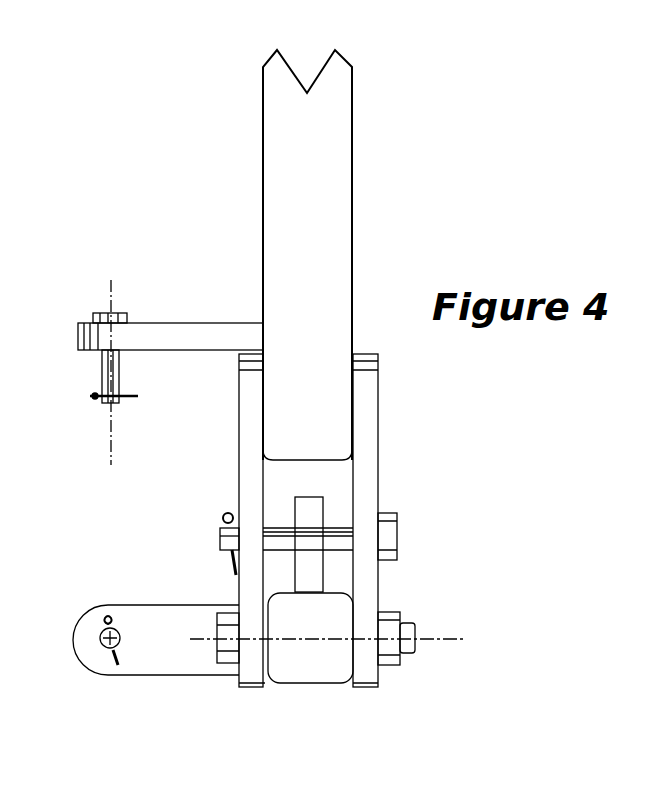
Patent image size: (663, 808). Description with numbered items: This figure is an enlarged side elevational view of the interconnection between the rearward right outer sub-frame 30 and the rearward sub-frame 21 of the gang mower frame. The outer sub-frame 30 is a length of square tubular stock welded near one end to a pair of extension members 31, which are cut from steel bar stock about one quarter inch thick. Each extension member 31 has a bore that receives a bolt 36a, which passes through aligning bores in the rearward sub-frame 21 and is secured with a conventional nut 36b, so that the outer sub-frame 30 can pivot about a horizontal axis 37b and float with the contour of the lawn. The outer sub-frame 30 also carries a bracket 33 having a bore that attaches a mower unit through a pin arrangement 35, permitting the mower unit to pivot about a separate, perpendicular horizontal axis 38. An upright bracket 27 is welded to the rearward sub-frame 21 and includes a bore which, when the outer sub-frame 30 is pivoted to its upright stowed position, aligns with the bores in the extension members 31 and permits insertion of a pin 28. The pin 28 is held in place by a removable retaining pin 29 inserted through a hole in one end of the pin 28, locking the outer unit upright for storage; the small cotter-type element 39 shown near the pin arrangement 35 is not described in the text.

The outer sub-frame 30 is at (360, 270).
The extension members 31 is at (239, 436).
The bracket 33 is at (173, 350).
The pin arrangement 35 is at (150, 310).
The horizontal axis 38 is at (110, 448).
The cotter pin 39 is at (92, 400).
The retaining pin 29 is at (218, 517).
The upright bracket 27 is at (325, 500).
The pin 28 is at (397, 513).
The rearward sub-frame 21 is at (295, 686).
The bolt 36a is at (217, 657).
The nut 36b is at (405, 612).
The horizontal axis 37b is at (453, 640).